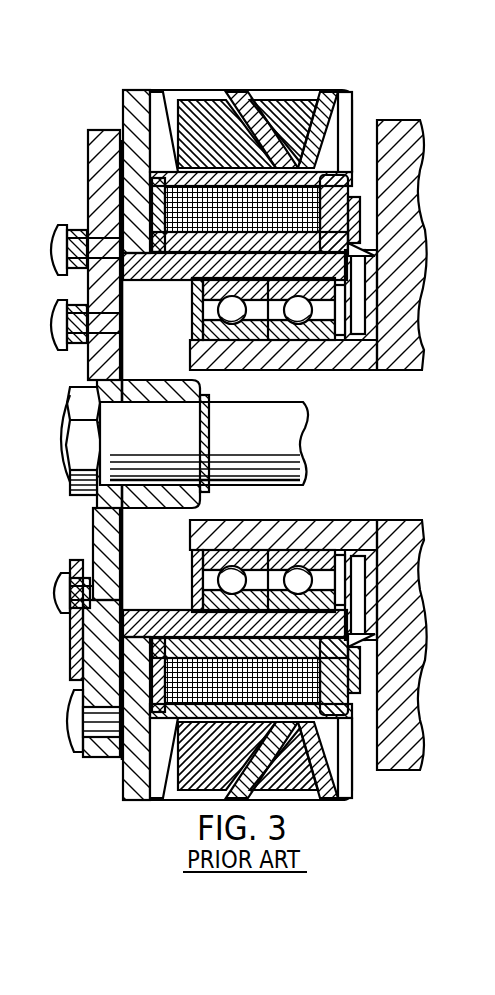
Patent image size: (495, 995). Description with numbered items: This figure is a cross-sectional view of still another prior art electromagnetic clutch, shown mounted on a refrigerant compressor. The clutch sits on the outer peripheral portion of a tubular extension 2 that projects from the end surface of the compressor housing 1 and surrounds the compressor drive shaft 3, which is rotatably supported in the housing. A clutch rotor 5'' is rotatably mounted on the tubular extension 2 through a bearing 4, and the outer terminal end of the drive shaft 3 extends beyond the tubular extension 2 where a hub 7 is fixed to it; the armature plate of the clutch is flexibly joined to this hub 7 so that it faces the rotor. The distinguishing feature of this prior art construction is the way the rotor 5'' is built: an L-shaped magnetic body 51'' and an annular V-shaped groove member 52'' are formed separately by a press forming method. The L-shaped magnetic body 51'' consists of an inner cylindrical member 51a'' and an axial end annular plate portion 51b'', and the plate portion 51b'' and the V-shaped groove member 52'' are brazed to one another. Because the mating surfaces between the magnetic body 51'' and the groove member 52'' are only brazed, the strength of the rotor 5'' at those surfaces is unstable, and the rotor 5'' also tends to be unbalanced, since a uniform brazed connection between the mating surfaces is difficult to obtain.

The compressor housing 1 is at (404, 157).
The tubular extension 2 is at (292, 368).
The drive shaft 3 is at (272, 438).
The bearing 4 is at (333, 345).
The rotor 5'' is at (261, 421).
The hub 7 is at (164, 512).
The L-shaped magnetic body 51'' is at (78, 443).
The inner cylindrical member 51a'' is at (235, 445).
The axial end annular plate portion 51b'' is at (95, 437).
The annular V-shaped groove member 52'' is at (263, 379).